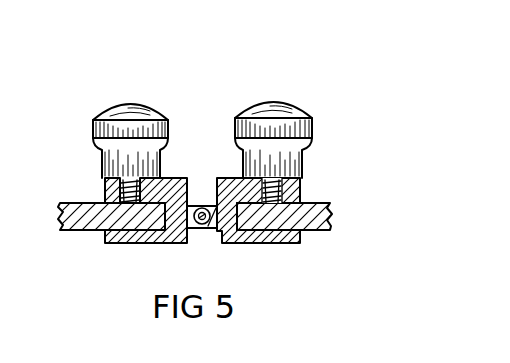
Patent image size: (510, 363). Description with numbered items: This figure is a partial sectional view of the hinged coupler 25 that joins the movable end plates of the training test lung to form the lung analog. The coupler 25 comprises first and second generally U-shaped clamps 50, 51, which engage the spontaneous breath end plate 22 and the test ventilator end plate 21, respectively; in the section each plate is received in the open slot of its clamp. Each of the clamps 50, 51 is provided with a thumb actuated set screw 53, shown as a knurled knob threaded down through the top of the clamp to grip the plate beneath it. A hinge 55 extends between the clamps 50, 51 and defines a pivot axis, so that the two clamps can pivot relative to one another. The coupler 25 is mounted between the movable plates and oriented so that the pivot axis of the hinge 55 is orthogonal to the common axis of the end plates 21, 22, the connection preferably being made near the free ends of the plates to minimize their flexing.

The test ventilator end plate 21 is at (90, 229).
The spontaneous breath end plate 22 is at (318, 229).
The hinged coupler 25 is at (239, 181).
The first U-shaped clamp 50 is at (270, 244).
The second U-shaped clamp 51 is at (128, 241).
The thumb actuated set screw 53 is at (137, 112).
The hinge 55 is at (202, 207).